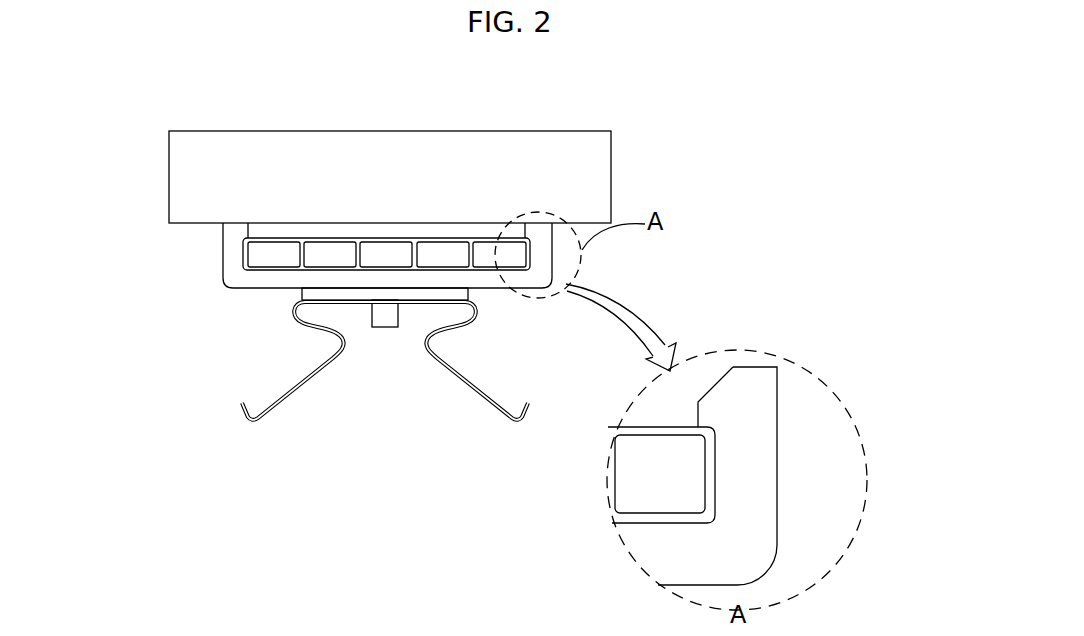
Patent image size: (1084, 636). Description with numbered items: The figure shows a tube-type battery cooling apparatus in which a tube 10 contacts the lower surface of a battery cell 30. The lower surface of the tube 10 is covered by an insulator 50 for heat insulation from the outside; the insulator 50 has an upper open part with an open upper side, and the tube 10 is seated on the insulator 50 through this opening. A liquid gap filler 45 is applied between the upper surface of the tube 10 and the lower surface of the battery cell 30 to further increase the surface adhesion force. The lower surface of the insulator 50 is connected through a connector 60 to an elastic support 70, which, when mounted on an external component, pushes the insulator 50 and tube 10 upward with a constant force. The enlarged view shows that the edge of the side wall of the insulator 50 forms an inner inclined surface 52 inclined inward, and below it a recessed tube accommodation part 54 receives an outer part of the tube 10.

The tube 10 is at (277, 253).
The battery cell 30 is at (561, 130).
The liquid gap filler 45 is at (268, 232).
The insulator 50 is at (533, 267).
The inner inclined surface 52 is at (712, 392).
The tube accommodation part 54 is at (715, 428).
The connector 60 is at (412, 293).
The elastic support 70 is at (465, 380).